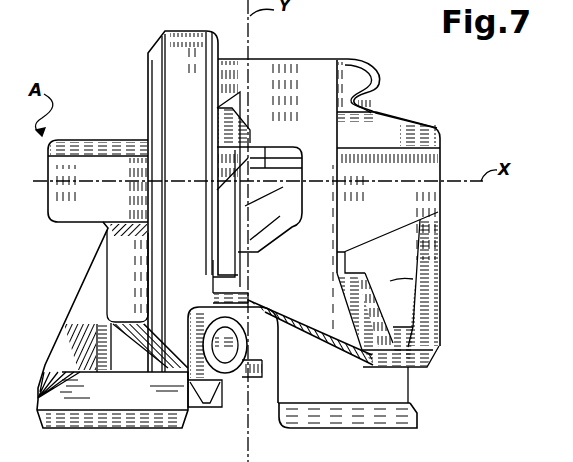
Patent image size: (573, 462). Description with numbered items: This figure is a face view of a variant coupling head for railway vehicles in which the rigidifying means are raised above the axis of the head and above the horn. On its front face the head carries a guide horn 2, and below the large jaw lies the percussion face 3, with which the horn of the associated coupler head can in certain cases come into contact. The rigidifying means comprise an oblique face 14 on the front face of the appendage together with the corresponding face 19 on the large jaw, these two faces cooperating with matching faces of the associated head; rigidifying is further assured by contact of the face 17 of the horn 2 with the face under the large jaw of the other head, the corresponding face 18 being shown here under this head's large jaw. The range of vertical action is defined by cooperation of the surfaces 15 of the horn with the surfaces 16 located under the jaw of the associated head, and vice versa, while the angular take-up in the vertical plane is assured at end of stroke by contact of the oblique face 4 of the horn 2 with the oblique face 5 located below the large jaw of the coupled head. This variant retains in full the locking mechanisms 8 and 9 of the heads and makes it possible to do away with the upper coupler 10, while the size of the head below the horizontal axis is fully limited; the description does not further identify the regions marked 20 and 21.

The guide horn 2 is at (112, 400).
The percussion face 3 is at (317, 243).
The oblique face 4 is at (85, 420).
The oblique face 5 is at (380, 420).
The locking mechanism 8 is at (236, 130).
The locking mechanism 9 is at (266, 178).
The upper coupler 10 is at (231, 355).
The oblique face 14 is at (90, 149).
The surface 15 is at (105, 323).
The surface 16 is at (420, 355).
The face 17 is at (88, 372).
The face 18 is at (408, 372).
The face 19 is at (395, 146).
The body face 20 is at (384, 203).
The block 21 is at (98, 181).